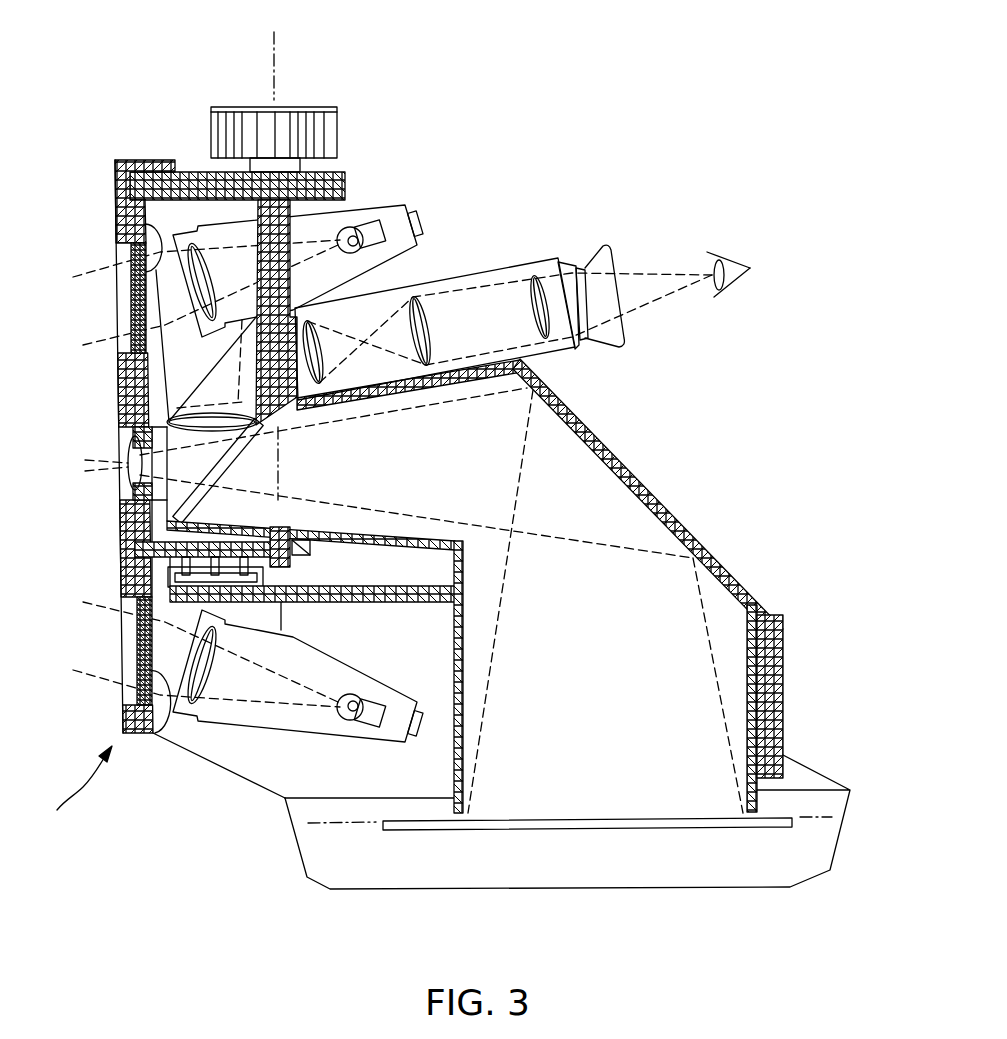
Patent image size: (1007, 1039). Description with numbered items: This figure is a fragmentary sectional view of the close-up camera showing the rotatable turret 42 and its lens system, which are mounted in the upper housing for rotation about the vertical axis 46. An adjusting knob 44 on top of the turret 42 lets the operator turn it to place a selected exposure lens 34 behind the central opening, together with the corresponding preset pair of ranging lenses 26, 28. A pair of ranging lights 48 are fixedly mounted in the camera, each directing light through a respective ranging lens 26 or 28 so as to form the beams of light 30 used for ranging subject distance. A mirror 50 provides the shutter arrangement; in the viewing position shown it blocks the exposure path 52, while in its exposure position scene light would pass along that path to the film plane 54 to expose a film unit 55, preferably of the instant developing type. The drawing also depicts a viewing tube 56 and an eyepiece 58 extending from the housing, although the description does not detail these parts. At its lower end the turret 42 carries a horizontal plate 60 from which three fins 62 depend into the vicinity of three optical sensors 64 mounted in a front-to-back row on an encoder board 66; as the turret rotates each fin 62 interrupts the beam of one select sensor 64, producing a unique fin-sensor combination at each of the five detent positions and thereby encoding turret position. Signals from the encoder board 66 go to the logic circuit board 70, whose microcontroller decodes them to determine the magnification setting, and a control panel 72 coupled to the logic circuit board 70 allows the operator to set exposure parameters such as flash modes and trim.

The ranging lens 26 is at (145, 226).
The ranging lens 28 is at (157, 735).
The beam of light 30 is at (88, 347).
The exposure lens 34 is at (125, 450).
The rotatable turret 42 is at (76, 797).
The adjusting knob 44 is at (308, 107).
The vertical axis 46 is at (274, 42).
The ranging light 48 is at (392, 203).
The mirror 50 is at (235, 455).
The exposure path 52 is at (92, 474).
The film plane 54 is at (356, 827).
The film unit 55 is at (597, 832).
The eyepiece tube 56 is at (470, 273).
The eyepiece 58 is at (603, 245).
The horizontal plate 60 is at (320, 545).
The fin 62 is at (262, 578).
The optical sensor 64 is at (268, 612).
The encoder board 66 is at (400, 597).
The logic circuit board 70 is at (763, 665).
The control panel 72 is at (780, 715).